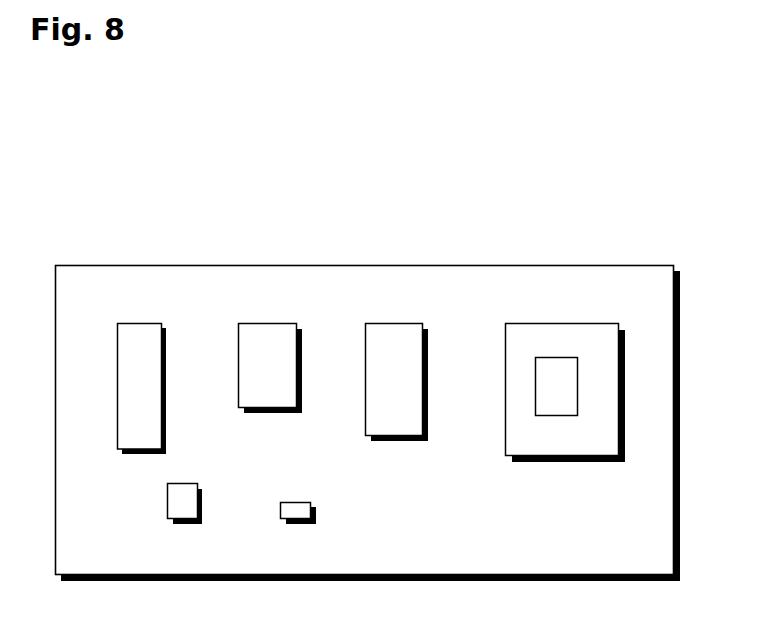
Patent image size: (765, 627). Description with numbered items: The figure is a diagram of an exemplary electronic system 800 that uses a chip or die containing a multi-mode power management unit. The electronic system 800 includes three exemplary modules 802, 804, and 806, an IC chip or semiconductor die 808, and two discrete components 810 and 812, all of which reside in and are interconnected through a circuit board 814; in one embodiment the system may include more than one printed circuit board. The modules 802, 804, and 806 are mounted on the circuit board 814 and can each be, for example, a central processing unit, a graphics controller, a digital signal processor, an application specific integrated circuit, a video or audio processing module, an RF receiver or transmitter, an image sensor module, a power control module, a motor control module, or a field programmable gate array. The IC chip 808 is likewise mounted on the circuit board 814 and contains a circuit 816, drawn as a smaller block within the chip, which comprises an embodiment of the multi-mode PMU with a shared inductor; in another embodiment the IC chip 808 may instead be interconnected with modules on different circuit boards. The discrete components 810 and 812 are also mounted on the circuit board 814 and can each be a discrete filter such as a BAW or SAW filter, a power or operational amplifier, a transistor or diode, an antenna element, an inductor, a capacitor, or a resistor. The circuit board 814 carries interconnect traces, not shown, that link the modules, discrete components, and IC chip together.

The electronic system 800 is at (650, 89).
The module 802 is at (117, 366).
The module 804 is at (238, 367).
The module 806 is at (365, 367).
The IC chip or semiconductor die 808 is at (505, 377).
The discrete component 810 is at (190, 483).
The discrete component 812 is at (304, 502).
The circuit board 814 is at (195, 265).
The circuit 816 is at (545, 357).